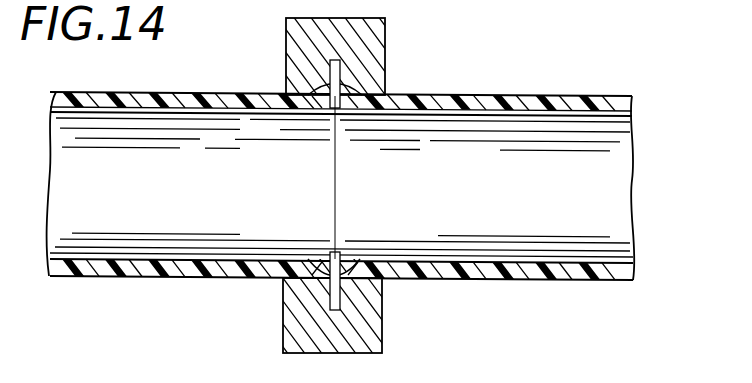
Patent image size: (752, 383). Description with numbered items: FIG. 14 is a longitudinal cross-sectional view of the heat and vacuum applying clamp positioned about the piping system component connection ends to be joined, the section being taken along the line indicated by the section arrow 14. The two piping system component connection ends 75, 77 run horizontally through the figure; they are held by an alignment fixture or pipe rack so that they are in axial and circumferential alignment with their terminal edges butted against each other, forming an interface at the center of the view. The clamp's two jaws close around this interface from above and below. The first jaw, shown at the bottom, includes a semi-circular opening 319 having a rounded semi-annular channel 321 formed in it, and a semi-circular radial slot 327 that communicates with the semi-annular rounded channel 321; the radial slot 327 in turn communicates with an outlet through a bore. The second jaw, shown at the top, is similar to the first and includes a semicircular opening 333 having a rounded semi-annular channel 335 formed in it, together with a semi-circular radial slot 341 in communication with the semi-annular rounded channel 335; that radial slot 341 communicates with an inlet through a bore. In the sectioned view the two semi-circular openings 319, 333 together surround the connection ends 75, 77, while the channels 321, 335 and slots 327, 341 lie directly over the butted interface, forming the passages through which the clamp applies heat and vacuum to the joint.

The section view indicator 14 is at (493, 0).
The piping system component connection end 75 is at (208, 107).
The piping system component connection end 77 is at (500, 110).
The semi-circular opening 319 is at (313, 278).
The semi-annular rounded channel 321 is at (343, 282).
The semi-circular radial slot 327 is at (333, 305).
The semicircular opening 333 is at (313, 97).
The semi-annular rounded channel 335 is at (345, 100).
The semi-circular radial slot 341 is at (340, 68).